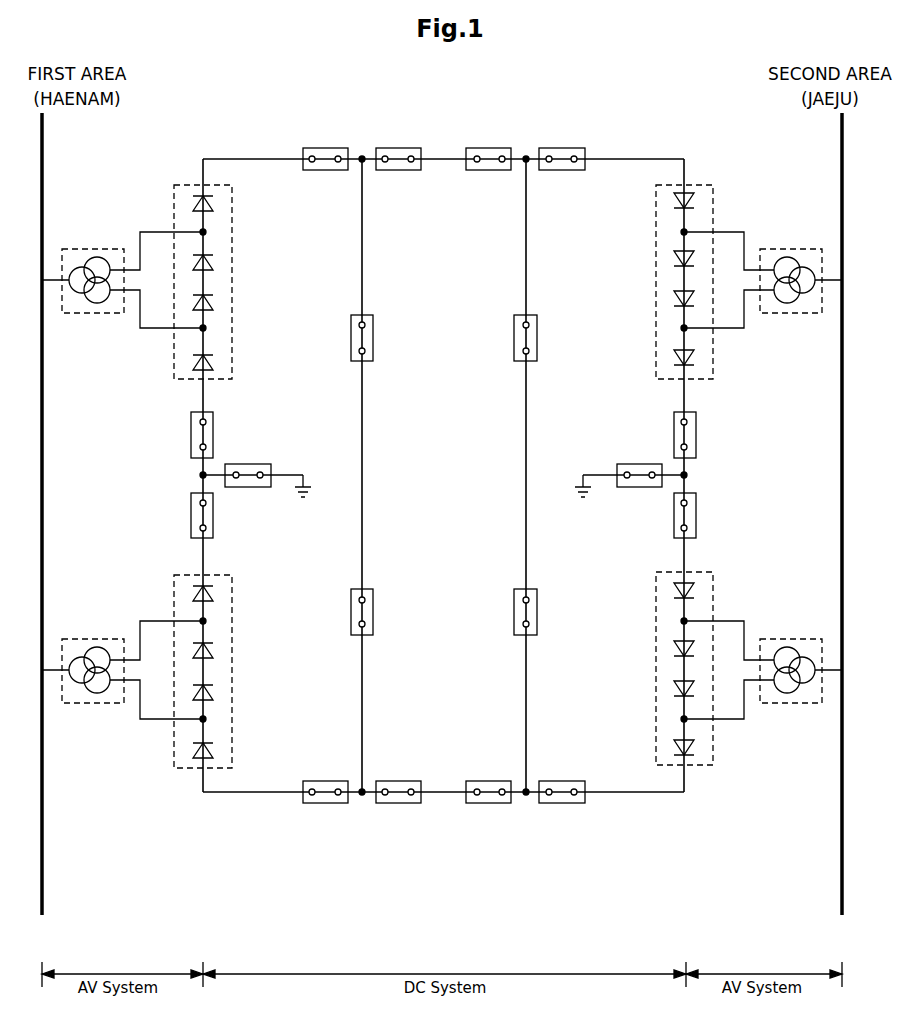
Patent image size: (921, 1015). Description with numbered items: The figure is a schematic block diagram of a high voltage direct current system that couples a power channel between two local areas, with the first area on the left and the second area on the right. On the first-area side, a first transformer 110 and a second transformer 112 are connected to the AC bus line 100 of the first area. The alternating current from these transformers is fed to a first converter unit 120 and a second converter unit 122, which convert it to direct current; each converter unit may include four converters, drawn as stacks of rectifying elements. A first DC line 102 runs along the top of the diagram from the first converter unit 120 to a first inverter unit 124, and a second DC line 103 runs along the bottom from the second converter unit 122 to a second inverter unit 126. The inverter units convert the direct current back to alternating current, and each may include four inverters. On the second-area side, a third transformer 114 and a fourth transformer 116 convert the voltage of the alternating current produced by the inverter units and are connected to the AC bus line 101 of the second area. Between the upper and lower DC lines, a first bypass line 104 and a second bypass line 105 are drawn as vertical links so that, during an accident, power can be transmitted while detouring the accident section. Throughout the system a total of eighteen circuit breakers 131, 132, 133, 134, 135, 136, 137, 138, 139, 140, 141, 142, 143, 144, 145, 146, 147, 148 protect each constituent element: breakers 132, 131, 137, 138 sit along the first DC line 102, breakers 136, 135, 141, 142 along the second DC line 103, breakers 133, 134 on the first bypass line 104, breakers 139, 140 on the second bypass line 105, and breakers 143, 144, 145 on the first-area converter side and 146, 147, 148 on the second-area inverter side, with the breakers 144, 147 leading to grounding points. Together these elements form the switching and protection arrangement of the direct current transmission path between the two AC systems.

The AC bus line of a first area 100 is at (42, 167).
The AC bus line of a second area 101 is at (842, 132).
The first DC line 102 is at (447, 160).
The second DC line 103 is at (447, 793).
The first bypass line 104 is at (363, 490).
The second bypass line 105 is at (527, 557).
The first transformer 110 is at (93, 248).
The second transformer 112 is at (90, 639).
The third transformer 114 is at (787, 249).
The fourth transformer 116 is at (800, 639).
The first converter unit 120 is at (232, 285).
The second converter unit 122 is at (232, 635).
The first inverter unit 124 is at (713, 193).
The second inverter unit 126 is at (713, 583).
The circuit breaker 131 is at (420, 134).
The circuit breaker 132 is at (347, 134).
The circuit breaker 133 is at (373, 332).
The circuit breaker 134 is at (373, 610).
The circuit breaker 135 is at (403, 781).
The circuit breaker 136 is at (345, 770).
The circuit breaker 137 is at (510, 134).
The circuit breaker 138 is at (574, 148).
The circuit breaker 139 is at (537, 332).
The circuit breaker 140 is at (537, 600).
The circuit breaker 141 is at (508, 770).
The circuit breaker 142 is at (588, 770).
The circuit breaker 143 is at (213, 422).
The circuit breaker 144 is at (263, 464).
The circuit breaker 145 is at (213, 530).
The circuit breaker 146 is at (674, 418).
The circuit breaker 147 is at (627, 464).
The circuit breaker 148 is at (697, 500).